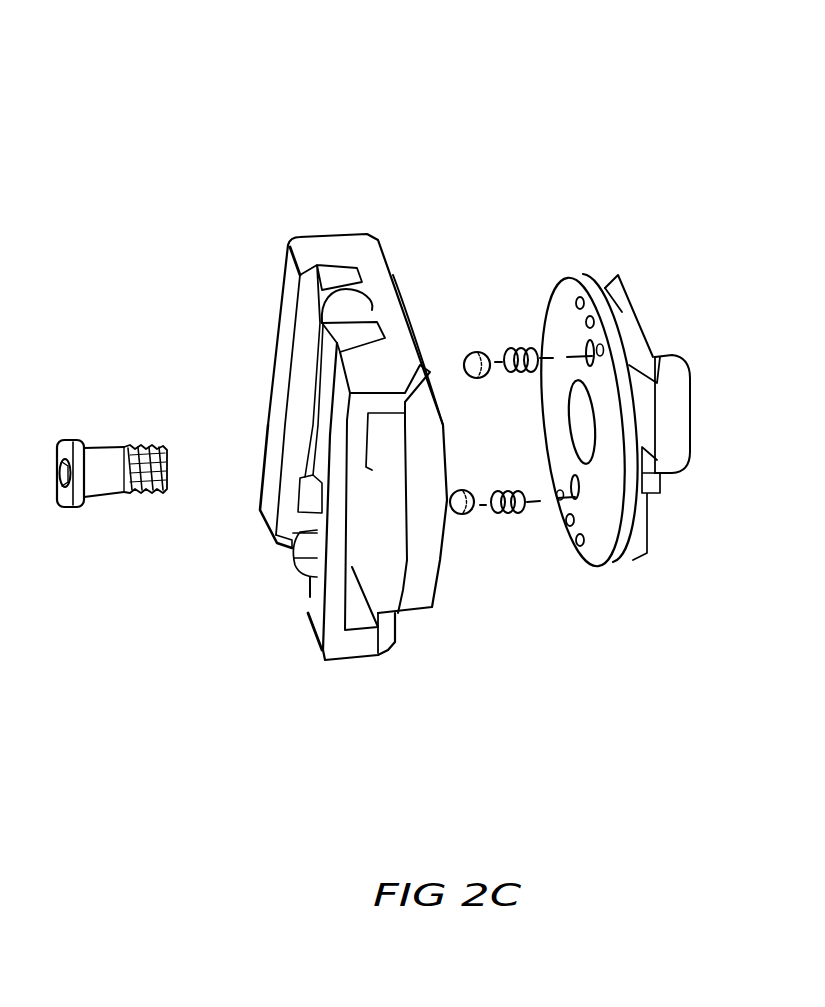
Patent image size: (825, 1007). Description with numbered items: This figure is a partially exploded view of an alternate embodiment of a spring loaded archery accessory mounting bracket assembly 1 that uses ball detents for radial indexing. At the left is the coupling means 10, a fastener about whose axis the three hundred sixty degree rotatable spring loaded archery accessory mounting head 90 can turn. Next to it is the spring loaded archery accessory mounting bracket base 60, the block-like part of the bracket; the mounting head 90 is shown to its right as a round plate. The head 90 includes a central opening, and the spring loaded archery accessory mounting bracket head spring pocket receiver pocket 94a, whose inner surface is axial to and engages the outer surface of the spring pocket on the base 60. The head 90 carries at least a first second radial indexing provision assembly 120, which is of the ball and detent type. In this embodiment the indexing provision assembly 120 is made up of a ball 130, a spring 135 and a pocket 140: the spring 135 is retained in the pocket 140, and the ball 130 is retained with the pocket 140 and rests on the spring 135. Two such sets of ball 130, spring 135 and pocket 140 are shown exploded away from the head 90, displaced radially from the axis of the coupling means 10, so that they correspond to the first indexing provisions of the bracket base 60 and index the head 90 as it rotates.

The spring loaded archery accessory mounting bracket assembly 1 is at (475, 0).
The coupling means 10 is at (72, 405).
The spring loaded archery accessory mounting bracket base 60 is at (333, 255).
The three hundred sixty degree rotatable spring loaded archery accessory mounting he 90 is at (622, 312).
The spring loaded archery accessory mounting bracket head spring pocket receiver poc 94a is at (582, 423).
The first second radial indexing provision assembly 120 is at (580, 300).
The ball 130 is at (468, 350).
The spring 135 is at (520, 333).
The pocket 140 is at (590, 348).